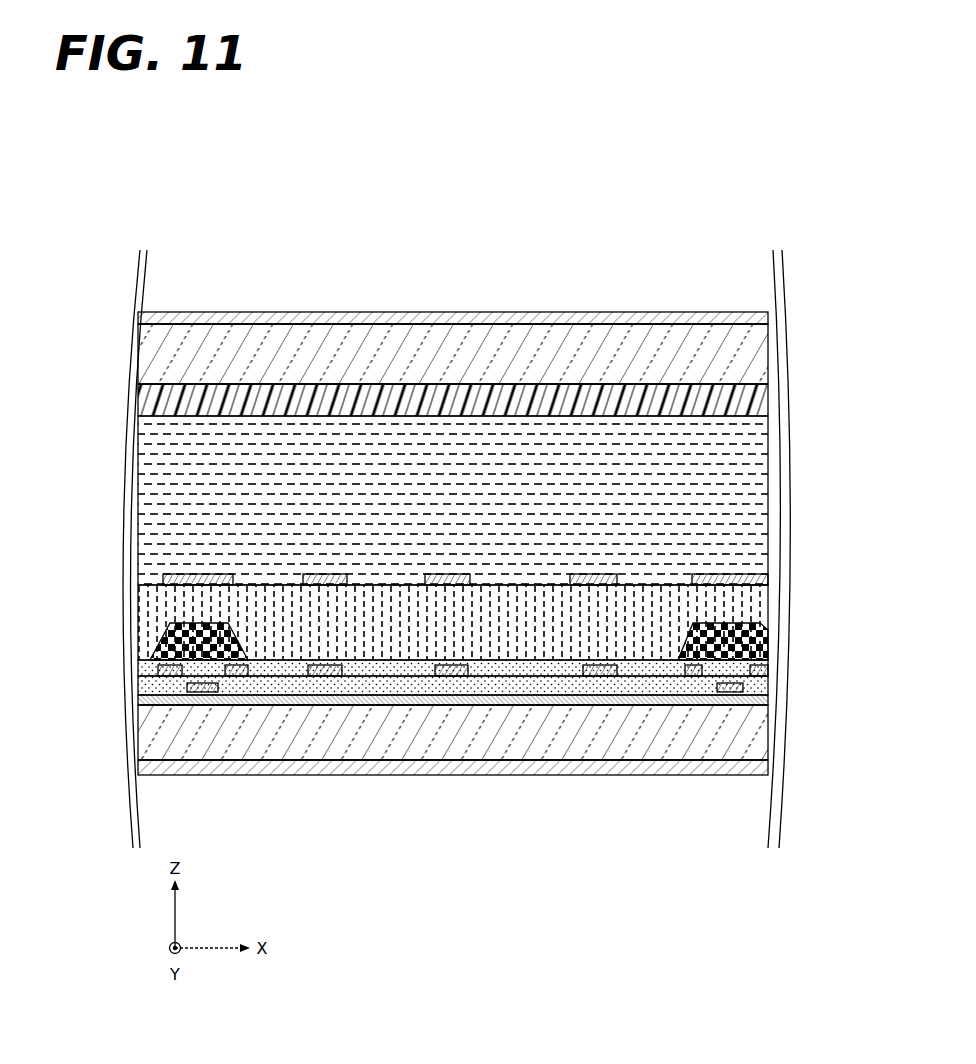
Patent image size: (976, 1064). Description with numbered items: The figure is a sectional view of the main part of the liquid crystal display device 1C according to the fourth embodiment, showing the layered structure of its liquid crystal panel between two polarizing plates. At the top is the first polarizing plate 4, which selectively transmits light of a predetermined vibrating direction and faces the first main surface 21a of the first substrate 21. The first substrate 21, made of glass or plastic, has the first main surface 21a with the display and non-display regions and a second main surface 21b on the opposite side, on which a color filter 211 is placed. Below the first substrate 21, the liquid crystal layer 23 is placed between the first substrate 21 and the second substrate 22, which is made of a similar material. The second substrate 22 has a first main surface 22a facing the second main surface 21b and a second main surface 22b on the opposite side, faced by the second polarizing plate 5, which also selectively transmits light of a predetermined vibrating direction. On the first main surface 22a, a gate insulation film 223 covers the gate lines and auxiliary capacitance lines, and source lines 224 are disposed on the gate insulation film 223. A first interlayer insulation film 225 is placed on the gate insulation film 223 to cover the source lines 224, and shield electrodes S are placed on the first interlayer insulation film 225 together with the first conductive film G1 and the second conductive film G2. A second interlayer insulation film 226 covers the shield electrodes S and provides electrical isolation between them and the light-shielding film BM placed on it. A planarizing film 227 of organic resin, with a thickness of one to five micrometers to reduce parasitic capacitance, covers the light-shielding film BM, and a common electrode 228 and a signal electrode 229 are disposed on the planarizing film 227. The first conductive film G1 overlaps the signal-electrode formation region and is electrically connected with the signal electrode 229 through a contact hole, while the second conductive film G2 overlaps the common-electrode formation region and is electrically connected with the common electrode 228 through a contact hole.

The liquid crystal display device 1C is at (390, 178).
The first polarizing plate 4 is at (463, 318).
The second polarizing plate 5 is at (578, 762).
The first substrate 21 is at (517, 363).
The first main surface 21a is at (760, 320).
The second main surface 21b is at (183, 397).
The color filter 211 is at (722, 397).
The liquid crystal layer 23 is at (573, 450).
The common electrode 228 is at (202, 574).
The signal electrode 229 is at (317, 574).
The planarizing film 227 is at (277, 603).
The light-shielding film BM is at (222, 660).
The first interlayer insulation film 225 is at (268, 678).
The second interlayer insulation film 226 is at (333, 690).
The shield electrode S is at (170, 677).
The first conductive film G1 is at (350, 676).
The second conductive film G2 is at (460, 676).
The source line 224 is at (207, 692).
The gate insulation film 223 is at (435, 705).
The second substrate 22 is at (392, 735).
The first main surface 22a is at (545, 705).
The second main surface 22b is at (512, 760).